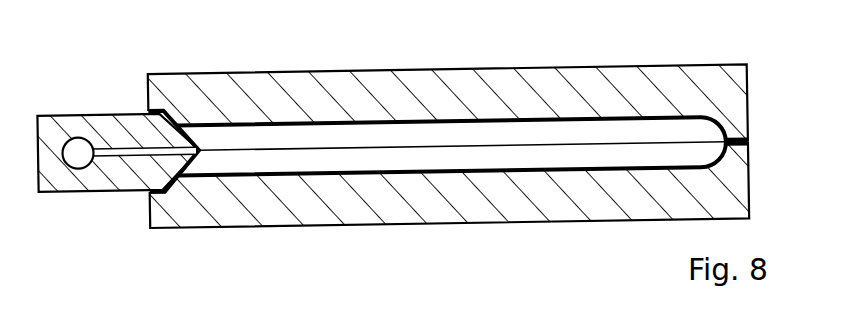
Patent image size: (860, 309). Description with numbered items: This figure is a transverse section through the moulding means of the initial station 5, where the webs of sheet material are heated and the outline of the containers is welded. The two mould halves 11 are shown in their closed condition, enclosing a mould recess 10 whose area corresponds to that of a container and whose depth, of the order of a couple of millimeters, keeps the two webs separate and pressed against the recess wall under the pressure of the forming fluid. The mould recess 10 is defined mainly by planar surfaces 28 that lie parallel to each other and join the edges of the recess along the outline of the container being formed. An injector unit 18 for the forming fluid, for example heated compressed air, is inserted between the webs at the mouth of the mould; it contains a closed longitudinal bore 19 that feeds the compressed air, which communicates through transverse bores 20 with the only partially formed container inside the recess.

The initial station 5 is at (401, 232).
The mould recess 10 is at (522, 111).
The mould half 11 is at (708, 80).
The injector unit 18 is at (96, 104).
The closed longitudinal bore 19 is at (72, 146).
The transverse bore 20 is at (128, 146).
The planar surface 28 is at (428, 121).